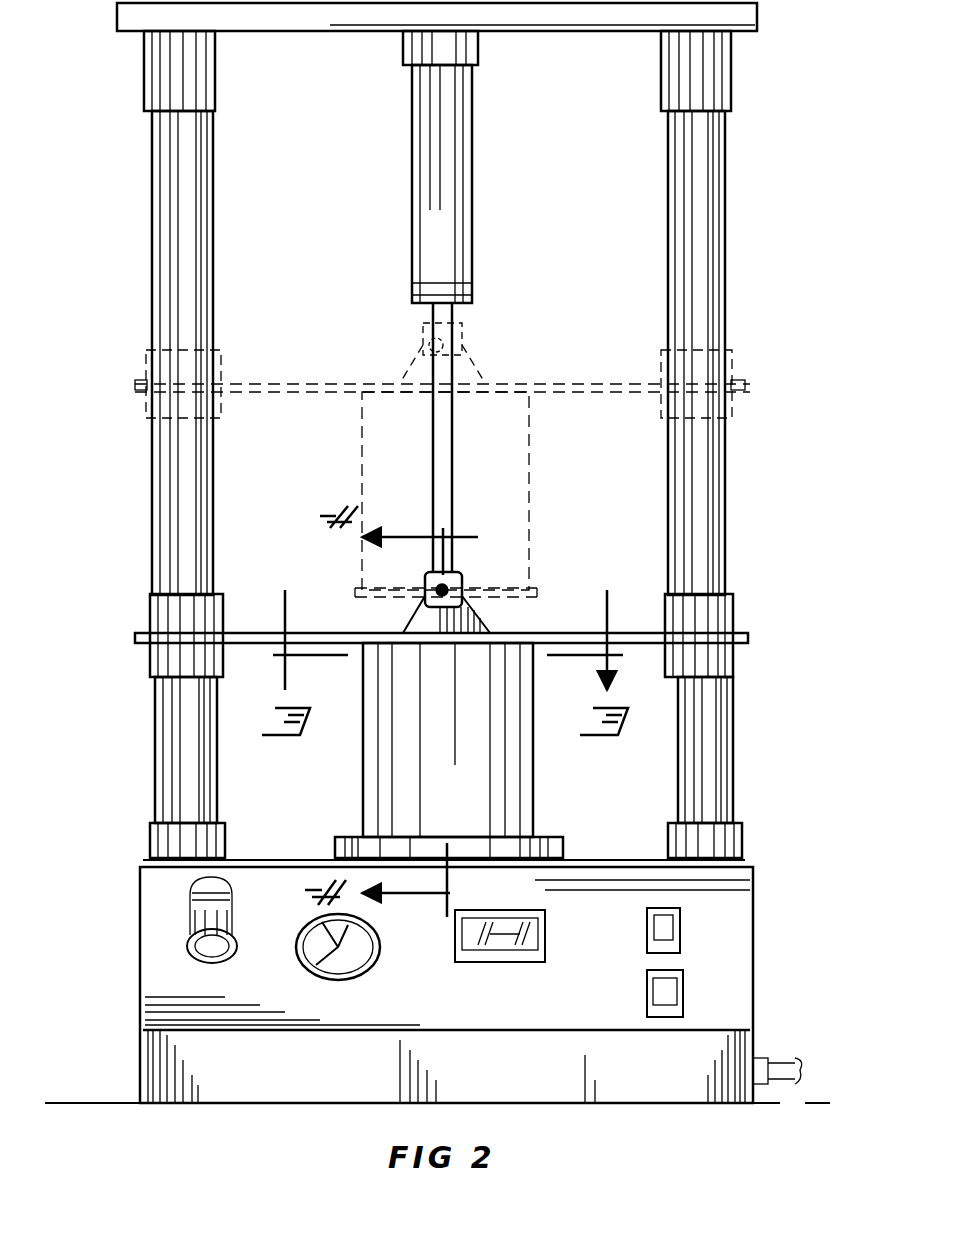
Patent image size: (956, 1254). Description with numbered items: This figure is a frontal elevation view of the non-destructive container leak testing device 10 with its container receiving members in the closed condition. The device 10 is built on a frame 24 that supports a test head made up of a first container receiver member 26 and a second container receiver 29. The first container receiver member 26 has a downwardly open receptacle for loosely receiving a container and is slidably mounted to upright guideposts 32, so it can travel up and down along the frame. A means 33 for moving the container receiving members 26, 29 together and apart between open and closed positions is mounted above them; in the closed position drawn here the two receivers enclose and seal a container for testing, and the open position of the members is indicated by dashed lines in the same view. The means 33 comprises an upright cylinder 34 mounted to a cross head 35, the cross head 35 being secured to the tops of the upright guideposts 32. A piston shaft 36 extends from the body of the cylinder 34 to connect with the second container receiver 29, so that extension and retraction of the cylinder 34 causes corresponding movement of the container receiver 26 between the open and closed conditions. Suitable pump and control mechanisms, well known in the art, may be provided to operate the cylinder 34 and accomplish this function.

The device 10 is at (752, 230).
The frame 24 is at (737, 504).
The first container receiver member 26 is at (556, 381).
The second container receiver 29 is at (566, 831).
The upright guideposts 32 is at (210, 776).
The means for moving the container receiving members 33 is at (476, 190).
The upright cylinder 34 is at (450, 128).
The cross head 35 is at (331, 25).
The piston shaft 36 is at (446, 458).